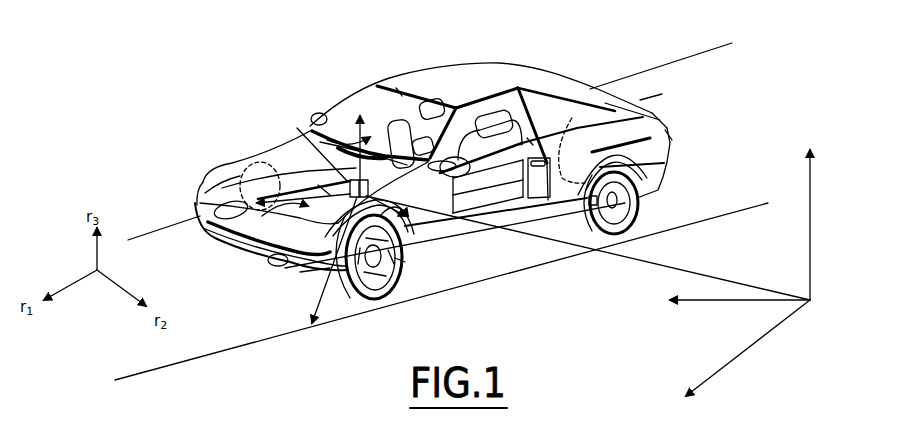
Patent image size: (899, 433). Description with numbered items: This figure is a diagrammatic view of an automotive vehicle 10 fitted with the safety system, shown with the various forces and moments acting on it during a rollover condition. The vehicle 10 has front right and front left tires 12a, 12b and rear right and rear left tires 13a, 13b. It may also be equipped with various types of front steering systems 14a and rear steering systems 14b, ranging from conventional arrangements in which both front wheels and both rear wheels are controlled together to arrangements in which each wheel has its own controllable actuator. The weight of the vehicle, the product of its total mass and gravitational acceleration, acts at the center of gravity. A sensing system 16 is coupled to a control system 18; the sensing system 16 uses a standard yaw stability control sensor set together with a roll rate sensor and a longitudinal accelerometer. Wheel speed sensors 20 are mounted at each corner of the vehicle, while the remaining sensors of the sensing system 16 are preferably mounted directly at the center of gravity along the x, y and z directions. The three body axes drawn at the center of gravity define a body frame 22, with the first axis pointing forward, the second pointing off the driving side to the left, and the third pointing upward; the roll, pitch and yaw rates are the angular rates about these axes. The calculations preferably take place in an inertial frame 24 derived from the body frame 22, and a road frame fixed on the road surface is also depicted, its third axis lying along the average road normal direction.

The automotive vehicle 10 is at (478, 68).
The front right tire 12a is at (225, 168).
The front left tire 12b is at (383, 300).
The rear right tire 13a is at (652, 99).
The left rear tire 13b is at (642, 213).
The front steering system 14a is at (298, 272).
The rear steering system 14b is at (668, 133).
The sensing system 16 is at (400, 95).
The control system 18 is at (516, 168).
The wheel speed sensors 20 is at (402, 262).
The body frame 22 is at (325, 192).
The inertial frame 24 is at (815, 300).